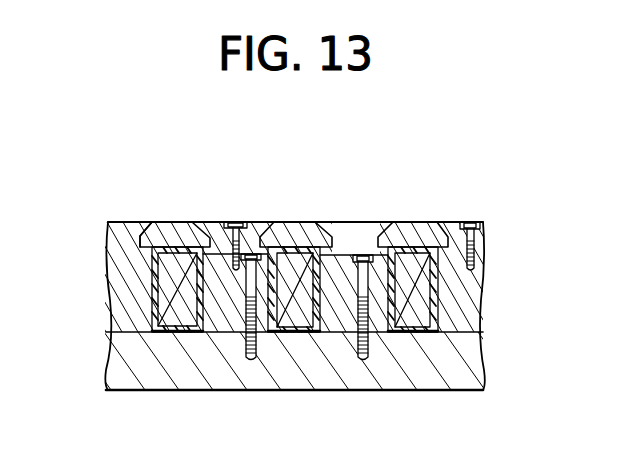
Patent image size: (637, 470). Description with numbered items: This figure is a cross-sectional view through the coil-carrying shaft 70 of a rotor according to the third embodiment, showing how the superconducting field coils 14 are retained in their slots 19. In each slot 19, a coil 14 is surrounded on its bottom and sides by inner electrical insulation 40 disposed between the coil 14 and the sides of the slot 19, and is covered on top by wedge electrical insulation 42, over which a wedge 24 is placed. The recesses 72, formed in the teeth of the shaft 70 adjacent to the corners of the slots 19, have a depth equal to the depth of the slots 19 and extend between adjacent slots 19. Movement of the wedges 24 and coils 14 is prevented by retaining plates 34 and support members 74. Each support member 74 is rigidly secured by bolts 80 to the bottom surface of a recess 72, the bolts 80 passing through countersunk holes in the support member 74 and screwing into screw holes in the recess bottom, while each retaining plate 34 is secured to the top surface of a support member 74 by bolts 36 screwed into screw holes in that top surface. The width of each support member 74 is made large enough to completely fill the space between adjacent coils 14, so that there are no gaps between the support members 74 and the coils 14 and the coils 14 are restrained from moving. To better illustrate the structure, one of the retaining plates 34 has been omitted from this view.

The superconducting field coil 14 is at (173, 318).
The slot 19 is at (153, 316).
The wedge 24 is at (189, 222).
The retaining plate 34 is at (213, 237).
The bolt 36 is at (237, 222).
The inner electrical insulation 40 is at (197, 303).
The wedge electrical insulation 42 is at (158, 222).
The coil-carrying shaft 70 is at (438, 362).
The recess 72 is at (350, 243).
The support member 74 is at (217, 273).
The bolt 80 is at (244, 348).